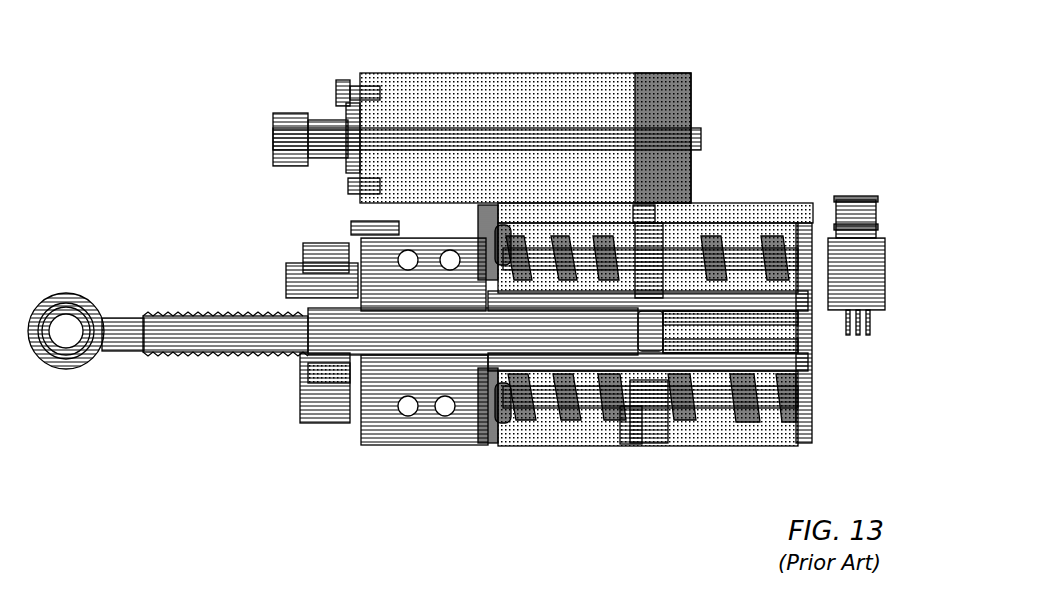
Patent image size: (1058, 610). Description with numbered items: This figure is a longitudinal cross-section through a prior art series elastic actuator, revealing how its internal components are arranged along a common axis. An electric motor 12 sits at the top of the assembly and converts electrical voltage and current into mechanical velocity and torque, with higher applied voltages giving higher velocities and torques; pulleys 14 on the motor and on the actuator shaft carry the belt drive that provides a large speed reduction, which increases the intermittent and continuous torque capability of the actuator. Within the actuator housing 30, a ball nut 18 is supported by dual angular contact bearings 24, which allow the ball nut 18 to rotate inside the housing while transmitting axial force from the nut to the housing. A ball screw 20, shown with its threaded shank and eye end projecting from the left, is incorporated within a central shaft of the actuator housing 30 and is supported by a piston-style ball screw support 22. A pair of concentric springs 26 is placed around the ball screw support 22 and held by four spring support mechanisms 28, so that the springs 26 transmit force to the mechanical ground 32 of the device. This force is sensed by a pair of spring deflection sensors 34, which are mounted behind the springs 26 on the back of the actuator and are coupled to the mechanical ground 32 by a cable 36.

The electric motor 12 is at (463, 63).
The pulleys 14 is at (308, 98).
The ball nut 18 is at (367, 358).
The ball screw 20 is at (191, 302).
The piston-style ball screw support 22 is at (600, 350).
The angular contact bearings 24 is at (427, 404).
The concentric springs 26 is at (727, 400).
The spring support mechanisms 28 is at (733, 230).
The actuator housing 30 is at (801, 382).
The mechanical ground 32 is at (625, 415).
The spring deflection sensors 34 is at (872, 272).
The cable 36 is at (801, 196).